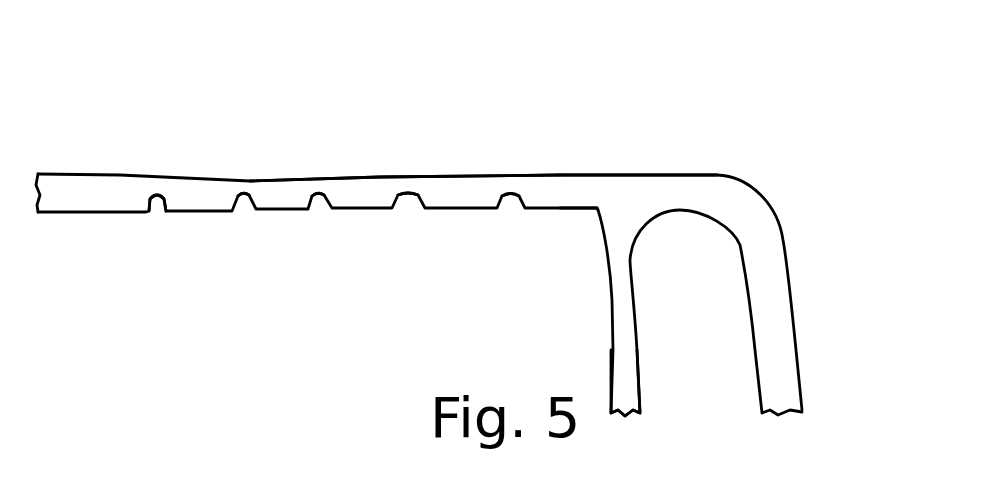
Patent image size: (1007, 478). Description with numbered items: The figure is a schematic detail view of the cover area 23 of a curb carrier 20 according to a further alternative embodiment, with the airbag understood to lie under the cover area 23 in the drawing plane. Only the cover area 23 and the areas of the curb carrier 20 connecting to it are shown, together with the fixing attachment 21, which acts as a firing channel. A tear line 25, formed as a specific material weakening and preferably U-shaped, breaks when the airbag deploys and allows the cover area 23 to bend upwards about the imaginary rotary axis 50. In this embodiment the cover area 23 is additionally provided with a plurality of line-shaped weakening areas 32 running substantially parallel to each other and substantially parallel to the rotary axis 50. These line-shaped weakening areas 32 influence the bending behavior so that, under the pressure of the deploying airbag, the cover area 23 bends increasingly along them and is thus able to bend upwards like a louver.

The curb carrier 20 is at (95, 184).
The fixing attachment 21 is at (630, 382).
The cover area 23 is at (372, 184).
The tear line 25 is at (156, 216).
The line-shaped weakening areas 32 is at (515, 206).
The imaginary rotary axis 50 is at (606, 203).